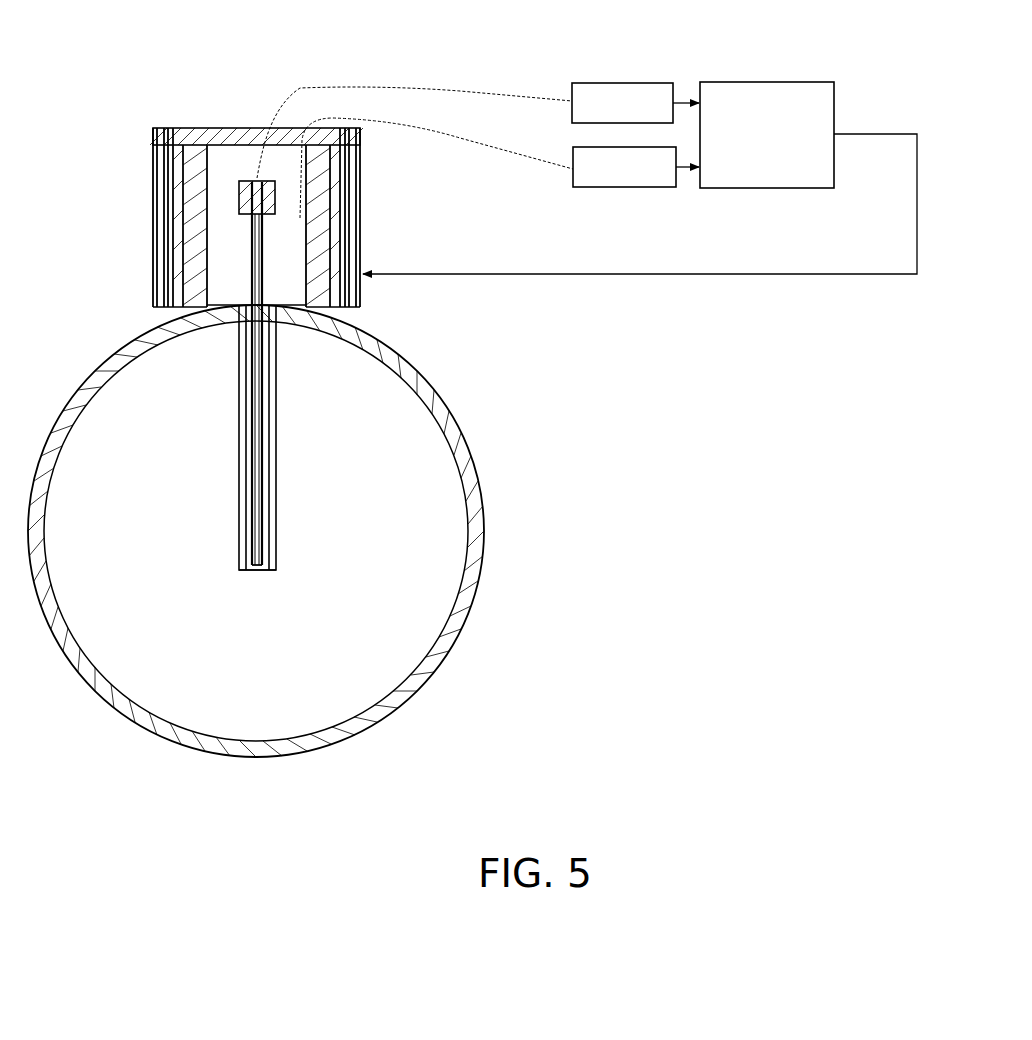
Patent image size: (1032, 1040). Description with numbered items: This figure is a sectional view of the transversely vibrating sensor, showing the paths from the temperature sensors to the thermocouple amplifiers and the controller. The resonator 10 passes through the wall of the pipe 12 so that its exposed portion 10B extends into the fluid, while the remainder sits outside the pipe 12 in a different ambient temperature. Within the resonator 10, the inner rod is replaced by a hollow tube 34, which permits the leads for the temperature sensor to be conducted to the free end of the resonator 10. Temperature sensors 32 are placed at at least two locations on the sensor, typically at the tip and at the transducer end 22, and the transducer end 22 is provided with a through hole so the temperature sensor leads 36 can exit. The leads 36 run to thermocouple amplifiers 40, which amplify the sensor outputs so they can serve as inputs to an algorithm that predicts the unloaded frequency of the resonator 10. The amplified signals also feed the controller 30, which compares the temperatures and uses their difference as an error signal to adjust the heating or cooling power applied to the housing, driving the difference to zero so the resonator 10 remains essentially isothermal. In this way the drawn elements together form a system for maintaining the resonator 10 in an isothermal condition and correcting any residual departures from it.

The resonator 10 is at (190, 417).
The exposed portion of resonator 10B is at (281, 468).
The pipe 12 is at (486, 524).
The transducer end 22 is at (238, 195).
The controller 30 is at (640, 178).
The temperature sensor 32 is at (256, 182).
The hollow tube 34 is at (262, 551).
The temperature sensor leads 36 is at (490, 147).
The thermocouple amplifier 40 is at (635, 135).